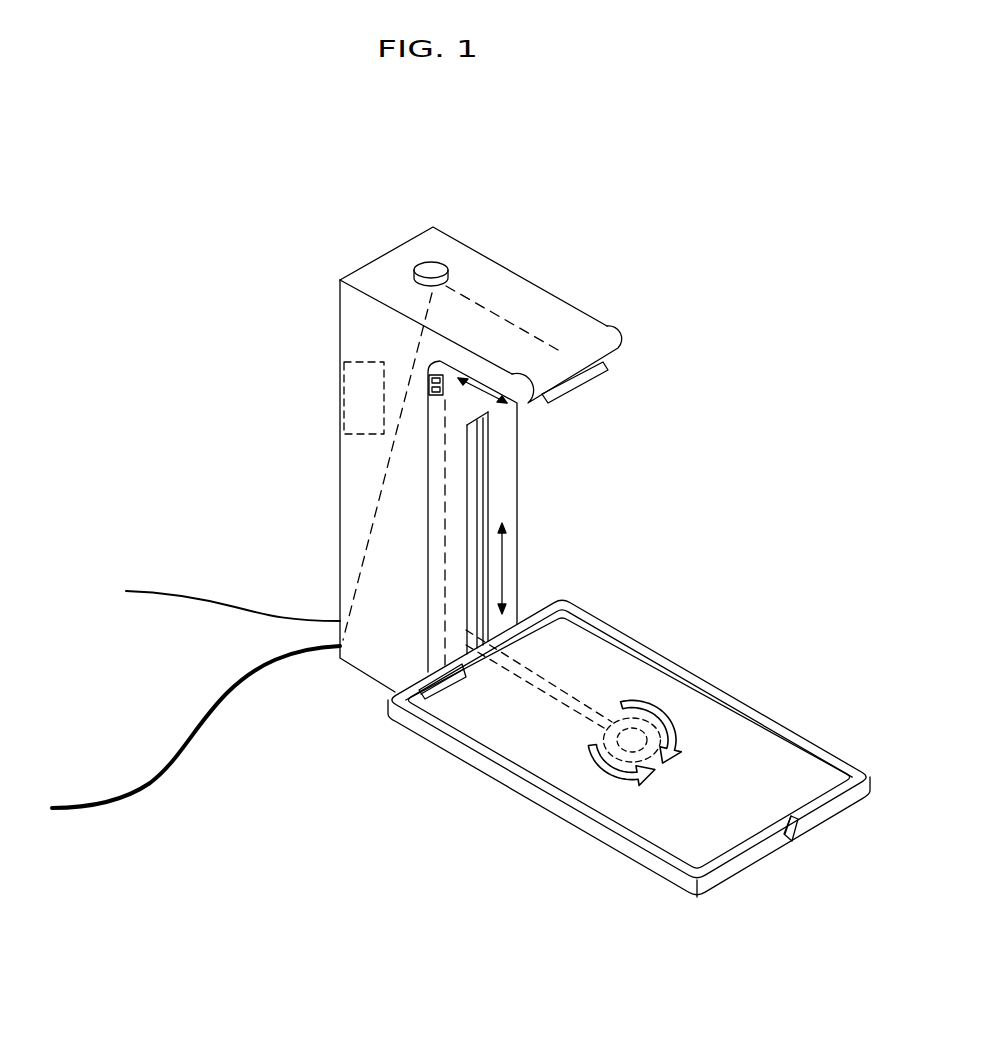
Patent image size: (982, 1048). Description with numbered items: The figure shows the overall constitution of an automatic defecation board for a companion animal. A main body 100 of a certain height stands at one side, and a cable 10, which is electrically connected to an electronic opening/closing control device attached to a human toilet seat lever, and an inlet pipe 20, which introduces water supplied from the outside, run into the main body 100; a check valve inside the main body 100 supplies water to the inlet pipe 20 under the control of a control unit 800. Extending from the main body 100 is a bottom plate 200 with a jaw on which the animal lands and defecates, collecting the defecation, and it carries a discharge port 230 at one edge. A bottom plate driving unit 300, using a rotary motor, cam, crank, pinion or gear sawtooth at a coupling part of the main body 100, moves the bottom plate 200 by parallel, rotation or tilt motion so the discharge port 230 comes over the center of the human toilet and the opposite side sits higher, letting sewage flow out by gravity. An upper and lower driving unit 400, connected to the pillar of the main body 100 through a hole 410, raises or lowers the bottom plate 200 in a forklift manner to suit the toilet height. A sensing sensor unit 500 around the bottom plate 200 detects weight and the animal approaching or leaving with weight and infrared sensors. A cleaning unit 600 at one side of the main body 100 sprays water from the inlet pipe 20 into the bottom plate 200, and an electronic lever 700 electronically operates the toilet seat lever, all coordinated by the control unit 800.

The cable 10 is at (173, 592).
The inlet pipe 20 is at (72, 803).
The main body 100 is at (348, 484).
The bottom plate 200 is at (532, 790).
The discharge port 230 is at (797, 828).
The bottom plate driving unit 300 is at (645, 722).
The upper and lower driving unit 400 is at (552, 678).
The hole 410 is at (483, 510).
The sensing sensor unit 500 is at (445, 385).
The cleaning unit 600 is at (597, 382).
The electronic lever 700 is at (447, 275).
The control unit 800 is at (368, 392).